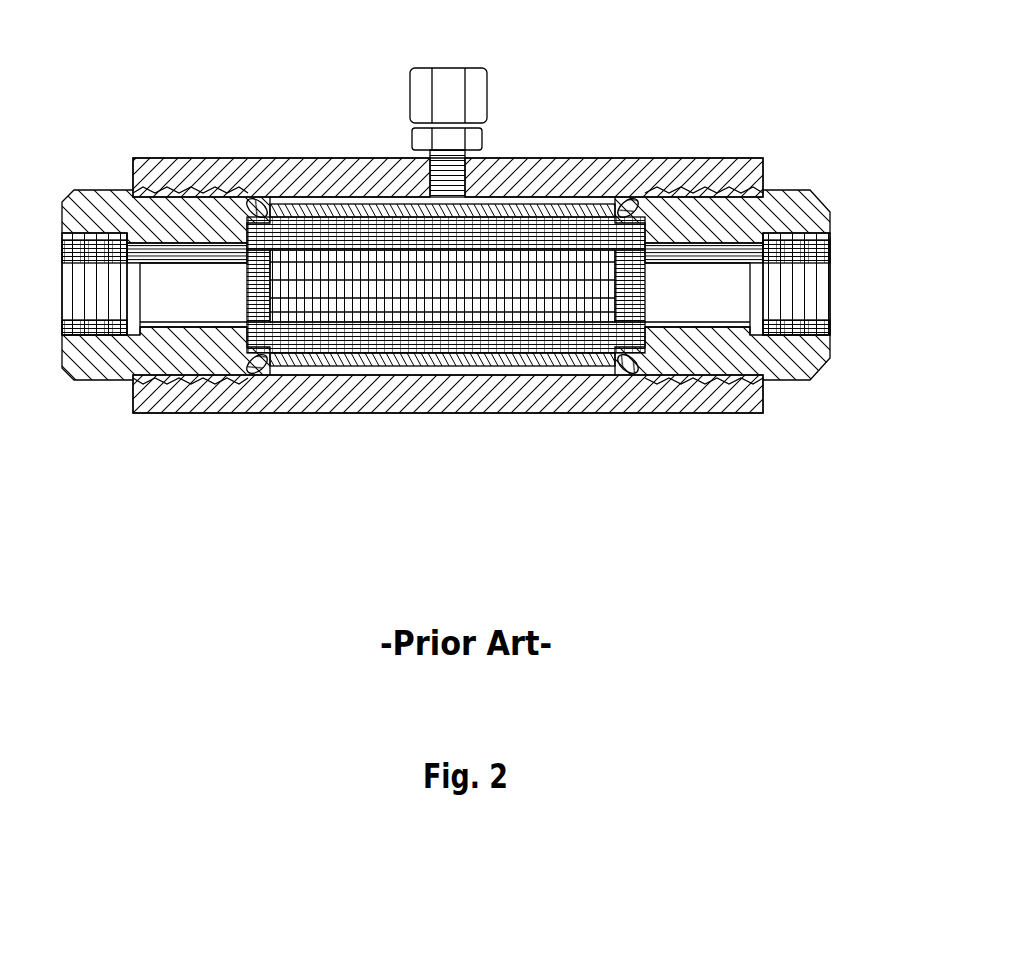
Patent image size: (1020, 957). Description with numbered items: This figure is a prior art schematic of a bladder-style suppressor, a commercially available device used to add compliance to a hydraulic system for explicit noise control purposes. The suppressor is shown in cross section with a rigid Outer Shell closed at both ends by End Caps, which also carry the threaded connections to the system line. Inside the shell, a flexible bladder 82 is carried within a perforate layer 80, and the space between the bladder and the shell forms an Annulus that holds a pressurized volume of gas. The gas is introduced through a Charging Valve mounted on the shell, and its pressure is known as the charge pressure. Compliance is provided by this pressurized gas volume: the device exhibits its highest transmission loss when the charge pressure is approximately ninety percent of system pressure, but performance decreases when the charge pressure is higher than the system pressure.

The perforate layer 80 is at (533, 225).
The bladder 82 is at (330, 215).
The outer shell Outer Shell is at (228, 157).
The charging valve Charging Valve is at (400, 57).
The end caps End Caps is at (175, 369).
The annulus Annulus is at (633, 290).